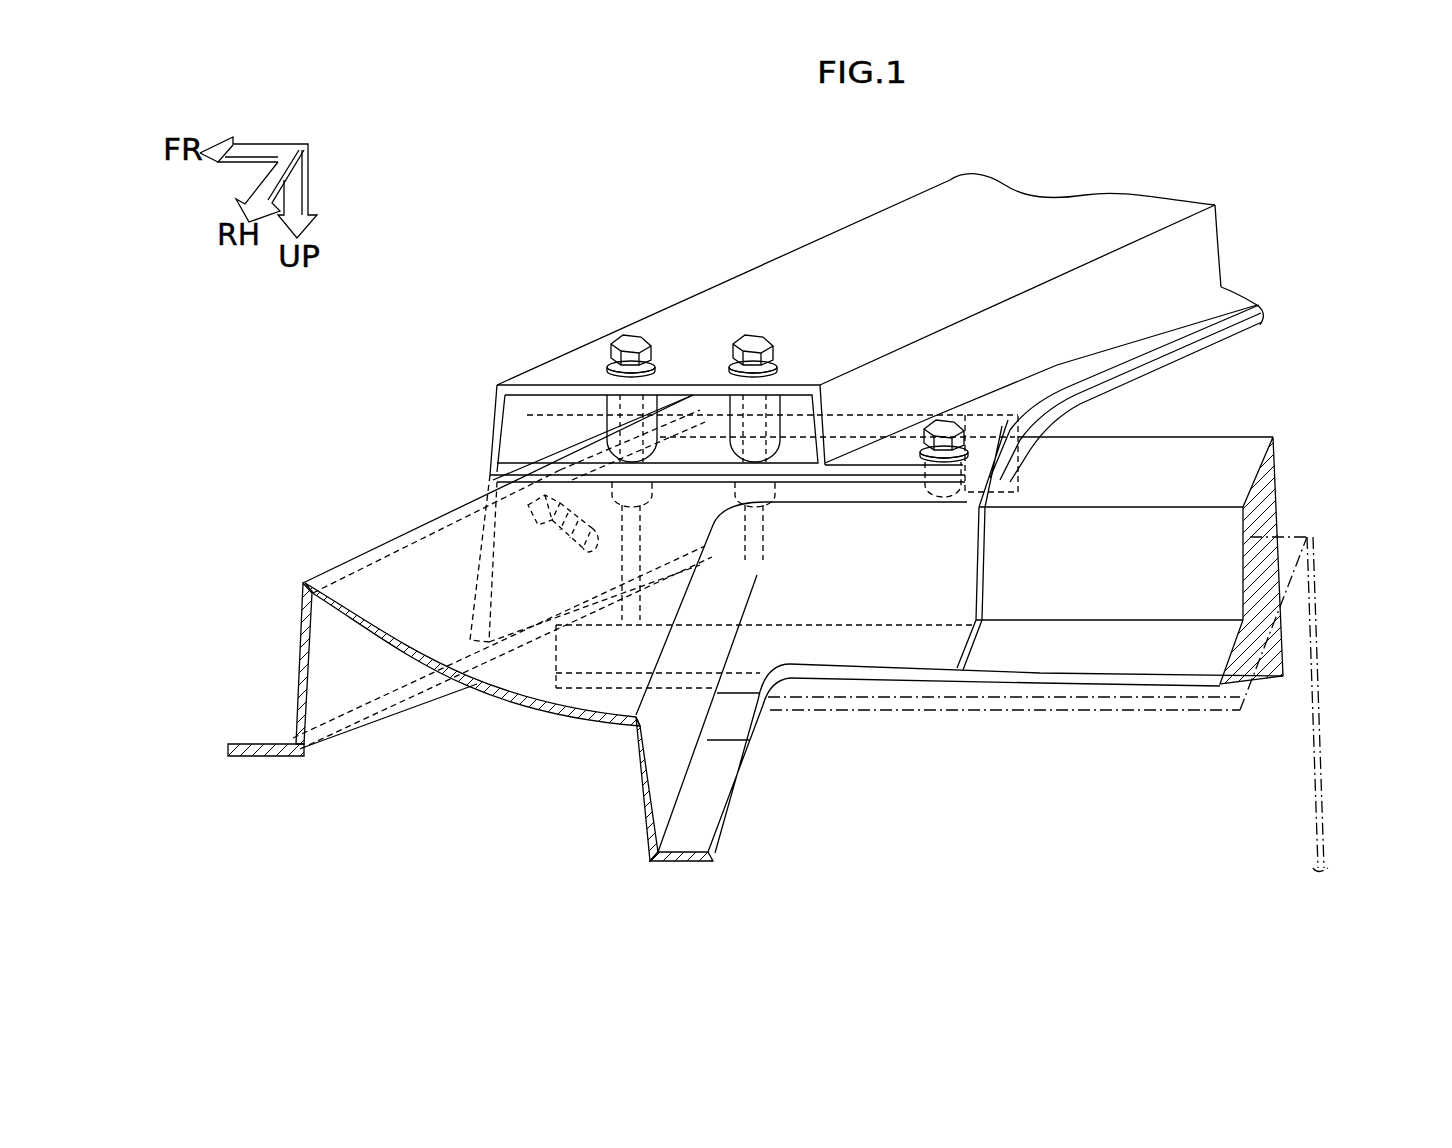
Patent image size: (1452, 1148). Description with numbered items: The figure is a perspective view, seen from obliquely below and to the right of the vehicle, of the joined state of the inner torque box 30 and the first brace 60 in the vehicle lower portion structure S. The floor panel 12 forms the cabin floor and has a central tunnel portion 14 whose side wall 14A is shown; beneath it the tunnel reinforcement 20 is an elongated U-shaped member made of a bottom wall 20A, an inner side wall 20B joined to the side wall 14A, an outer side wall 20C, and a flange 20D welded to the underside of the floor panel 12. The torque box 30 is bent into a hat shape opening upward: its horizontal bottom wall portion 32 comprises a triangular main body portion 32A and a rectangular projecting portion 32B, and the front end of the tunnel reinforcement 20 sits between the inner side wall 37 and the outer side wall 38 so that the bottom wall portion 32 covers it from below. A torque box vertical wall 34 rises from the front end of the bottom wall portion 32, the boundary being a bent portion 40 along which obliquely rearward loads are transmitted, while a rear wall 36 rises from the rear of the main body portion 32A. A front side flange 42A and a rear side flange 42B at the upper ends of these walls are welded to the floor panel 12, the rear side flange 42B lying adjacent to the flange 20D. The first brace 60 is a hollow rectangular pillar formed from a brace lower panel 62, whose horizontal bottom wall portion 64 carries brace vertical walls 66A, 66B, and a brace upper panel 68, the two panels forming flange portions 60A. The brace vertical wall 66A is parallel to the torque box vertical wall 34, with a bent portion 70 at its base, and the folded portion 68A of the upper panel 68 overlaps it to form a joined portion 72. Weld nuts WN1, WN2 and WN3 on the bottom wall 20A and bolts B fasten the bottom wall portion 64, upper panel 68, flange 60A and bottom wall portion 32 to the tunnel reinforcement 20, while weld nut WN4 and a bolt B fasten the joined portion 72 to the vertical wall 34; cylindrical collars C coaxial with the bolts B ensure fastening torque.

The floor panel 12 is at (1172, 712).
The tunnel portion 14 is at (1322, 805).
The side wall 14A is at (1318, 747).
The tunnel reinforcement 20 is at (1096, 571).
The bottom wall 20A is at (1218, 435).
The inner side wall 20B is at (1282, 500).
The outer side wall 20C is at (1250, 582).
The flange 20D is at (1100, 690).
The inner torque box 30 is at (308, 575).
The horizontal bottom wall portion 32 is at (505, 707).
The main body portion 32A is at (505, 677).
The projecting portion 32B is at (1000, 476).
The torque box vertical wall 34 is at (292, 650).
The rear wall 36 is at (637, 787).
The inner side wall 37 is at (1030, 460).
The outer side wall 38 is at (984, 574).
The bent portion 40 is at (352, 565).
The front side flange 42A is at (250, 757).
The rear side flange 42B is at (680, 866).
The first brace 60 is at (353, 330).
The flange portion 60A is at (1270, 299).
The brace lower panel 62 is at (507, 375).
The horizontal bottom wall portion 64 is at (1062, 212).
The brace vertical wall 66A is at (497, 392).
The brace vertical wall 66B is at (1195, 256).
The brace upper panel 68 is at (523, 457).
The folded portion 68A is at (690, 575).
The bent portion 70 is at (770, 264).
The joined portion 72 is at (460, 607).
The bolt B is at (647, 340).
The collar C is at (603, 413).
The vehicle lower portion structure S is at (472, 255).
The weld nut WN1 is at (630, 651).
The weld nut WN2 is at (762, 505).
The weld nut WN3 is at (950, 490).
The weld nut WN4 is at (485, 572).